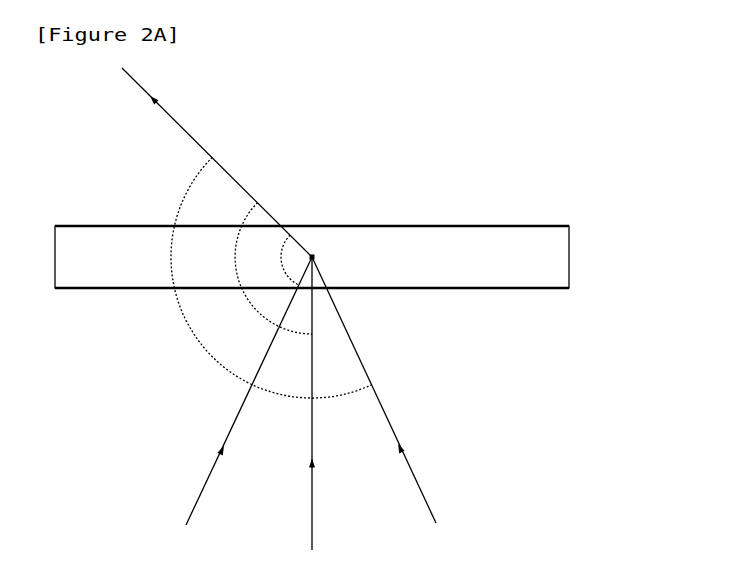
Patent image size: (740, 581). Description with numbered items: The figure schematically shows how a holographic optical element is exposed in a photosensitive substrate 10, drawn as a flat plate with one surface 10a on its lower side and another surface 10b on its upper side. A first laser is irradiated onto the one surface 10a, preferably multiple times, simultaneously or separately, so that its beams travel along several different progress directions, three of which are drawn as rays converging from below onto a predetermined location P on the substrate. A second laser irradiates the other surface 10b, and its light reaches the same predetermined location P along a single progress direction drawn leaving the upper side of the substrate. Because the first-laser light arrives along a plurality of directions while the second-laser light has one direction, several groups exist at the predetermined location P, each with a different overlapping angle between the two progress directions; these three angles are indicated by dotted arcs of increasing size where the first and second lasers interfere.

The photosensitive substrate 10 is at (593, 258).
The one surface of the photosensitive substrate 10a is at (522, 288).
The another surface of the photosensitive substrate 10b is at (522, 226).
The predetermined location P is at (324, 259).